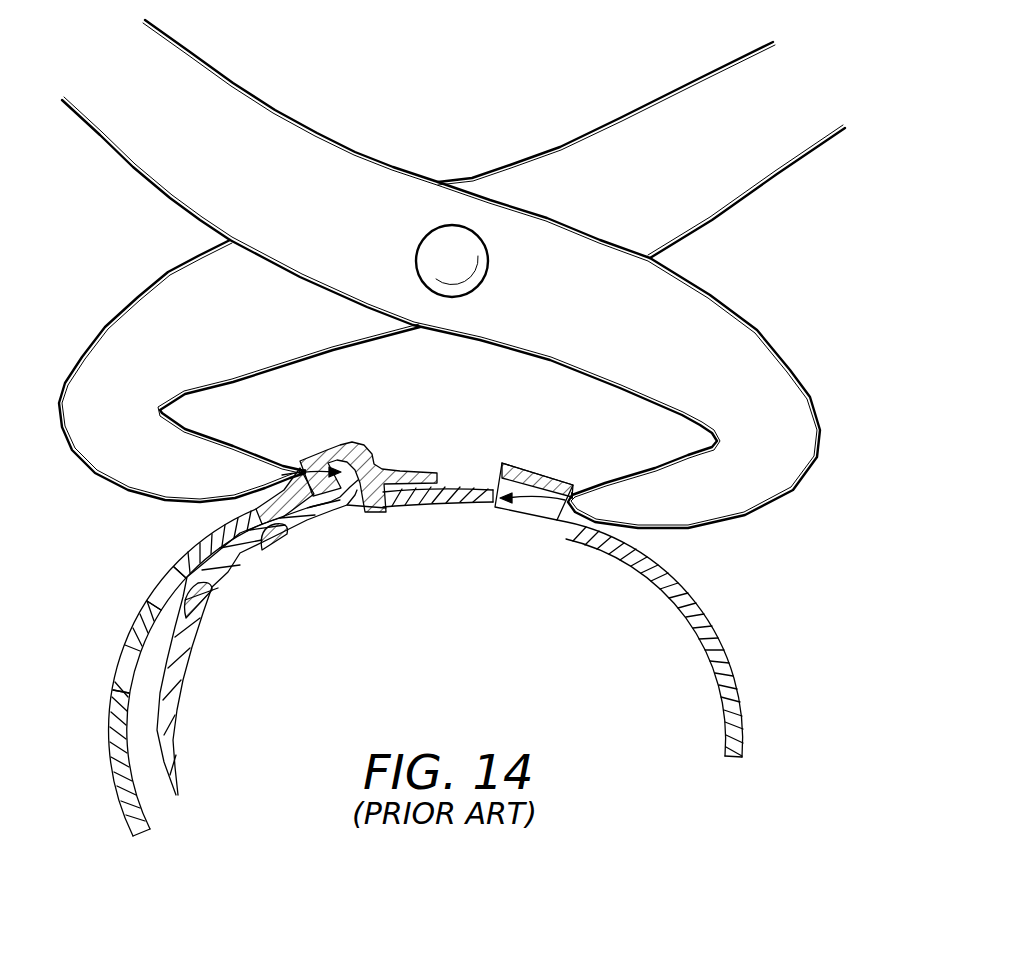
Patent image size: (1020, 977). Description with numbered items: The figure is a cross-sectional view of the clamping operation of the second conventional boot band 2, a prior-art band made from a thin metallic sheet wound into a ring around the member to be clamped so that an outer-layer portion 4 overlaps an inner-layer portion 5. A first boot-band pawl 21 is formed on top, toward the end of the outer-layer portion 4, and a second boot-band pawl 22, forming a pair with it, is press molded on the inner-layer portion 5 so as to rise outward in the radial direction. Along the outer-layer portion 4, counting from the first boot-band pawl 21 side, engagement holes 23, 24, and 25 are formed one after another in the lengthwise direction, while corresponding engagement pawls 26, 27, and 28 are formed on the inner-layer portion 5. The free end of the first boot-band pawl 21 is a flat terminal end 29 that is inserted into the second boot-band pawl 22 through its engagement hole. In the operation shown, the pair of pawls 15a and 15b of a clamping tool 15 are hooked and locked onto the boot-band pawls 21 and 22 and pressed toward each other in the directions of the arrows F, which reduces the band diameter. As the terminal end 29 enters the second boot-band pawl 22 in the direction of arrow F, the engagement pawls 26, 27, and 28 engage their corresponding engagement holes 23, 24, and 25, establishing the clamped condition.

The clamping tool 15 is at (765, 323).
The pawl 15a is at (299, 471).
The pawl 15b is at (573, 490).
The first boot-band pawl 21 is at (318, 452).
The second boot-band pawl 22 is at (505, 462).
The engagement hole 23 is at (230, 528).
The outer-layer portion 4 is at (160, 580).
The engagement hole 24 is at (156, 603).
The engagement hole 25 is at (128, 672).
The engagement pawl 26 is at (346, 494).
The engagement pawl 27 is at (288, 553).
The engagement pawl 28 is at (214, 600).
The inner-layer portion 5 is at (392, 508).
The terminal end 29 is at (410, 476).
The second conventional boot band 2 is at (754, 664).
The arrow F is at (338, 446).